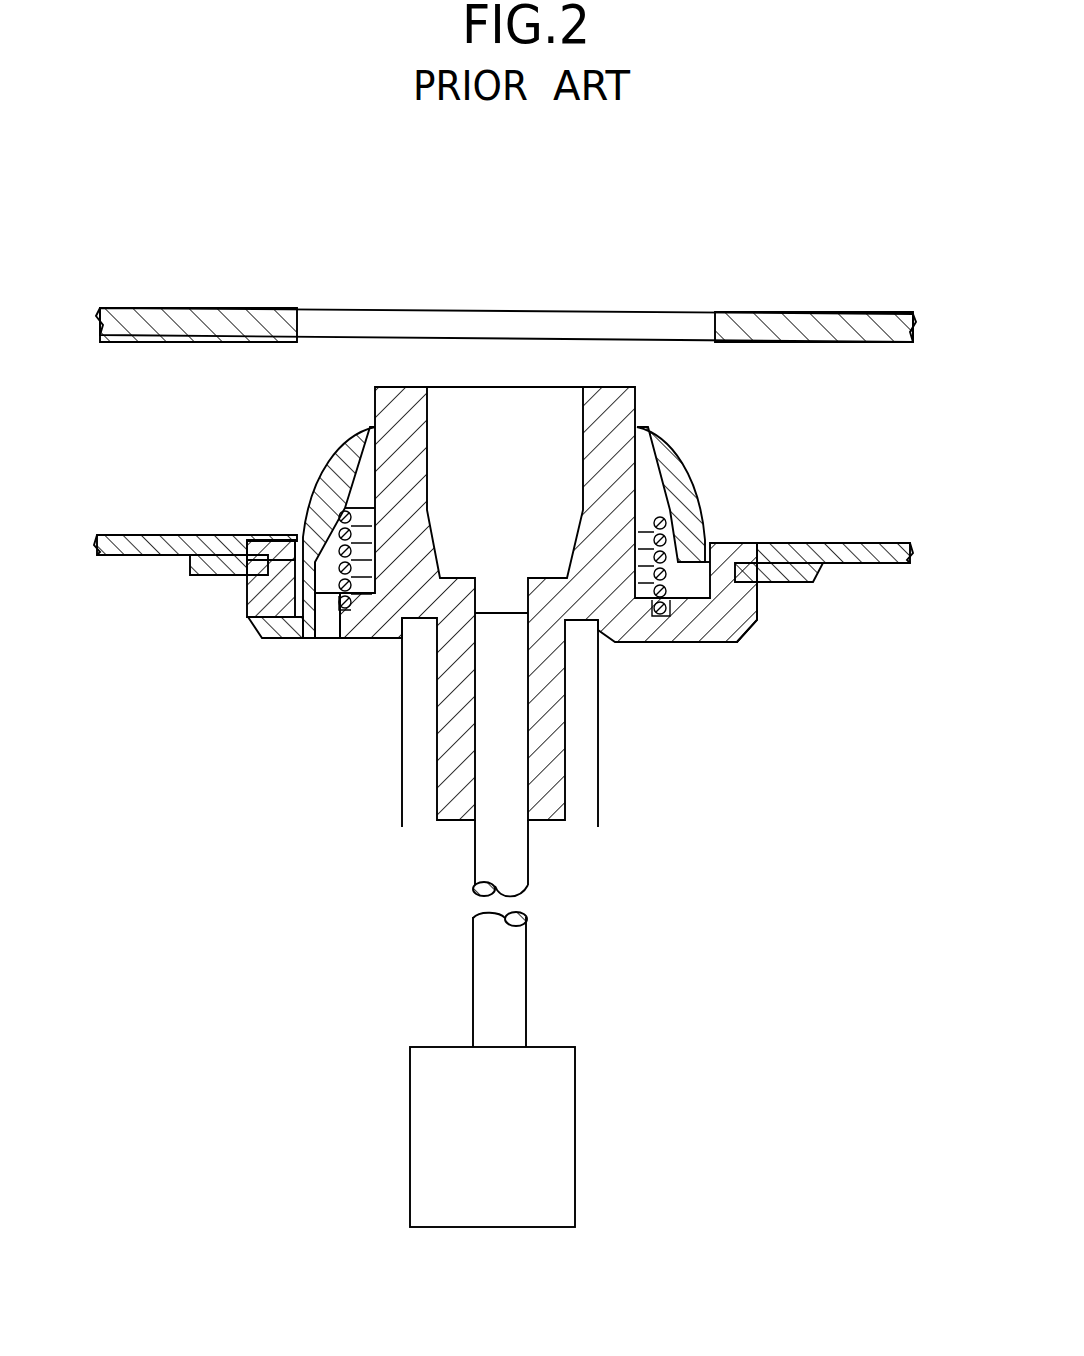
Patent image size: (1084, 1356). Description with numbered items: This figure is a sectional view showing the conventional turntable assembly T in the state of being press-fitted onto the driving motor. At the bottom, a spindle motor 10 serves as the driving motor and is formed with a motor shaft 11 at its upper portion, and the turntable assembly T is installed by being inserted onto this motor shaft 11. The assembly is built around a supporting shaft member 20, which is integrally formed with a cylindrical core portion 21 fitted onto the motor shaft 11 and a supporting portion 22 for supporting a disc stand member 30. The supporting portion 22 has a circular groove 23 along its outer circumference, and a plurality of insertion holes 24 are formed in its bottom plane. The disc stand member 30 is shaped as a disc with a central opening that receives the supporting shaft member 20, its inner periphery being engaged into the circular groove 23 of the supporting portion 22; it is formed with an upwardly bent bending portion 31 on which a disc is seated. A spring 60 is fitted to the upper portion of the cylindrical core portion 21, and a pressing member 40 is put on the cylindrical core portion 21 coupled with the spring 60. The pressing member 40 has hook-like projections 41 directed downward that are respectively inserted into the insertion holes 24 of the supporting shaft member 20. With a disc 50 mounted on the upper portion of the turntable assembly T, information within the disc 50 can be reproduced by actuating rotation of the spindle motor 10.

The spindle motor 10 is at (586, 1106).
The motor shaft 11 is at (510, 878).
The supporting shaft member 20 is at (640, 409).
The cylindrical core portion 21 is at (403, 402).
The supporting portion 22 is at (263, 603).
The circular groove 23 is at (250, 583).
The insertion holes 24 is at (327, 630).
The disc stand member 30 is at (110, 536).
The bending portion 31 is at (185, 567).
The pressing member 40 is at (327, 508).
The hook-like projections 41 is at (303, 628).
The disc 50 is at (803, 327).
The spring 60 is at (660, 532).
The turntable assembly T is at (864, 494).